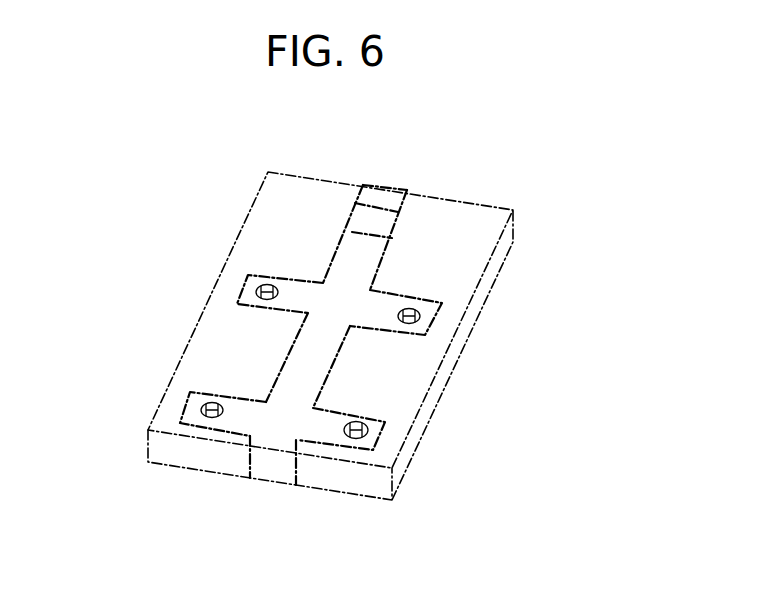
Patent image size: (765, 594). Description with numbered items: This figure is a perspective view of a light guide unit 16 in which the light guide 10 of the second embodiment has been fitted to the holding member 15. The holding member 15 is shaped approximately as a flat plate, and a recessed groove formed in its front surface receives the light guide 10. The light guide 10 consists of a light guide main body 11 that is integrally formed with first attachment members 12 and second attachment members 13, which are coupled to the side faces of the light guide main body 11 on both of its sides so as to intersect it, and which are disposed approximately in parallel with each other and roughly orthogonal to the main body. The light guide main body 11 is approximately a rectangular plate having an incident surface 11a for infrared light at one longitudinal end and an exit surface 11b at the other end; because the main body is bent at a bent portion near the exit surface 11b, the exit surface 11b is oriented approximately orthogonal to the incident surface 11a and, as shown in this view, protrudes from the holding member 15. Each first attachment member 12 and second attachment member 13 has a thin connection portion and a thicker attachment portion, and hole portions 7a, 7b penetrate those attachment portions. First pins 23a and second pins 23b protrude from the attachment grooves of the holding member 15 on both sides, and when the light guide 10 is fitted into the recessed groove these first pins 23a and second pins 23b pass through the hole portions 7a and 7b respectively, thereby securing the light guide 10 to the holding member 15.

The plate 16 is at (370, 280).
The holding member 15 is at (331, 301).
The light guide 10 is at (288, 339).
The light guide main body 11 is at (292, 352).
The incident surface 11a is at (272, 468).
The exit surface 11b is at (382, 190).
The first attachment member 12 is at (383, 290).
The second attachment member 13 is at (320, 447).
The hole portion 7a is at (240, 295).
The hole portion 7b is at (198, 408).
The first pin 23a is at (258, 288).
The second pin 23b is at (208, 403).